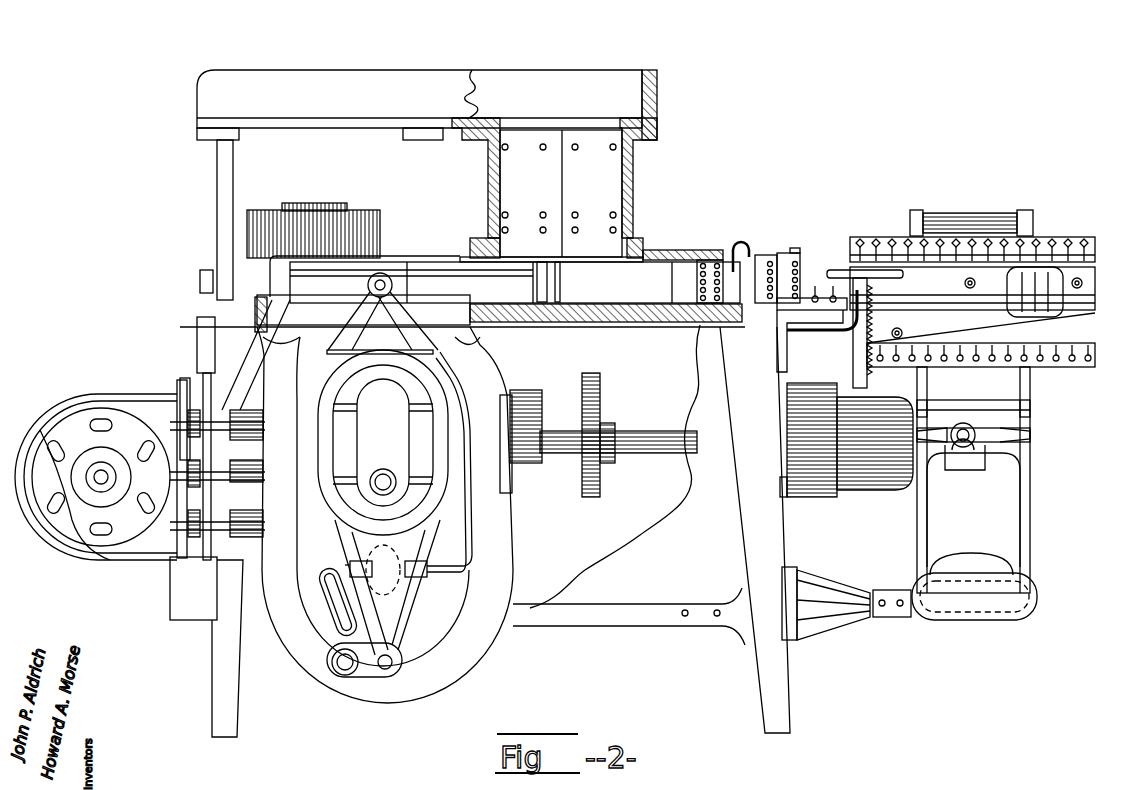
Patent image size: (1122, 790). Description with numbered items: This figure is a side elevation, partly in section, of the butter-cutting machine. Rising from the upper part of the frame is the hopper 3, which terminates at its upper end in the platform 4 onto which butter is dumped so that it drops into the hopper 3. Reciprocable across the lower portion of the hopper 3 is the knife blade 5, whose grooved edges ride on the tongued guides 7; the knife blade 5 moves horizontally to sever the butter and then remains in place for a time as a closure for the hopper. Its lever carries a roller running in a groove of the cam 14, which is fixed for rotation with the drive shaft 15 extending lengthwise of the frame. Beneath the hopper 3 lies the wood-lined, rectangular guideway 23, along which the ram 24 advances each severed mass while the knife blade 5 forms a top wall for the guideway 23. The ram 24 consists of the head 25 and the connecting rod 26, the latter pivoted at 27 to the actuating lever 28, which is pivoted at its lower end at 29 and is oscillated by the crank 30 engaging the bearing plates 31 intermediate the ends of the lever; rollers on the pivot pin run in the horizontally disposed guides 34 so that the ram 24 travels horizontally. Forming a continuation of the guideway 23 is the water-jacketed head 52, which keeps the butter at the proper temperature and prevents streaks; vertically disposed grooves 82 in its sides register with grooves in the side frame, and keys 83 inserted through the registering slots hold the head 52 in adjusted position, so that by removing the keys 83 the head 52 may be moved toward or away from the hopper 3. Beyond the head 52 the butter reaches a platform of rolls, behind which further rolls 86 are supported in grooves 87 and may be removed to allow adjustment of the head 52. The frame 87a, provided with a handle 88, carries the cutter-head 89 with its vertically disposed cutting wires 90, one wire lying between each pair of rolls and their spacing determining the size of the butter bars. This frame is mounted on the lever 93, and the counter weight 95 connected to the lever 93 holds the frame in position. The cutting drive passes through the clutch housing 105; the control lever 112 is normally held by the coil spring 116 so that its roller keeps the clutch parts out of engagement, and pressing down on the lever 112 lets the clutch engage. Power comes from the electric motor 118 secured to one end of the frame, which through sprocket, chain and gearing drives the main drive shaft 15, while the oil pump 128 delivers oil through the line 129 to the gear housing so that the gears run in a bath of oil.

The hopper 3 is at (628, 197).
The platform 4 is at (468, 118).
The knife blade 5 is at (604, 257).
The tongued guides 7 is at (645, 243).
The cam 14 is at (596, 378).
The main drive shaft 15 is at (645, 440).
The guideway 23 is at (655, 300).
The ram 24 is at (530, 258).
The head 25 is at (560, 276).
The connecting rod 26 is at (437, 283).
The pivot 27 is at (381, 283).
The actuating lever 28 is at (350, 318).
The pivot 29 is at (386, 669).
The crank 30 is at (380, 482).
The bearing plates 31 is at (406, 437).
The horizontally disposed guides 34 is at (326, 278).
The water-jacketed head 52 is at (787, 256).
The vertically disposed grooves 82 is at (758, 265).
The keys 83 is at (735, 248).
The rolls 86 is at (815, 297).
The grooves 87 is at (1030, 385).
The frame 87a is at (802, 305).
The handle 88 is at (975, 215).
The cutter-head 89 is at (1095, 245).
The cutting wires 90 is at (1093, 343).
The lever 93 is at (1030, 530).
The counter weight 95 is at (1000, 614).
The clutch housing 105 is at (855, 475).
The control lever 112 is at (905, 330).
The coil spring 116 is at (866, 325).
The electric motor 118 is at (65, 420).
The oil pump 128 is at (345, 565).
The oil line 129 is at (468, 540).